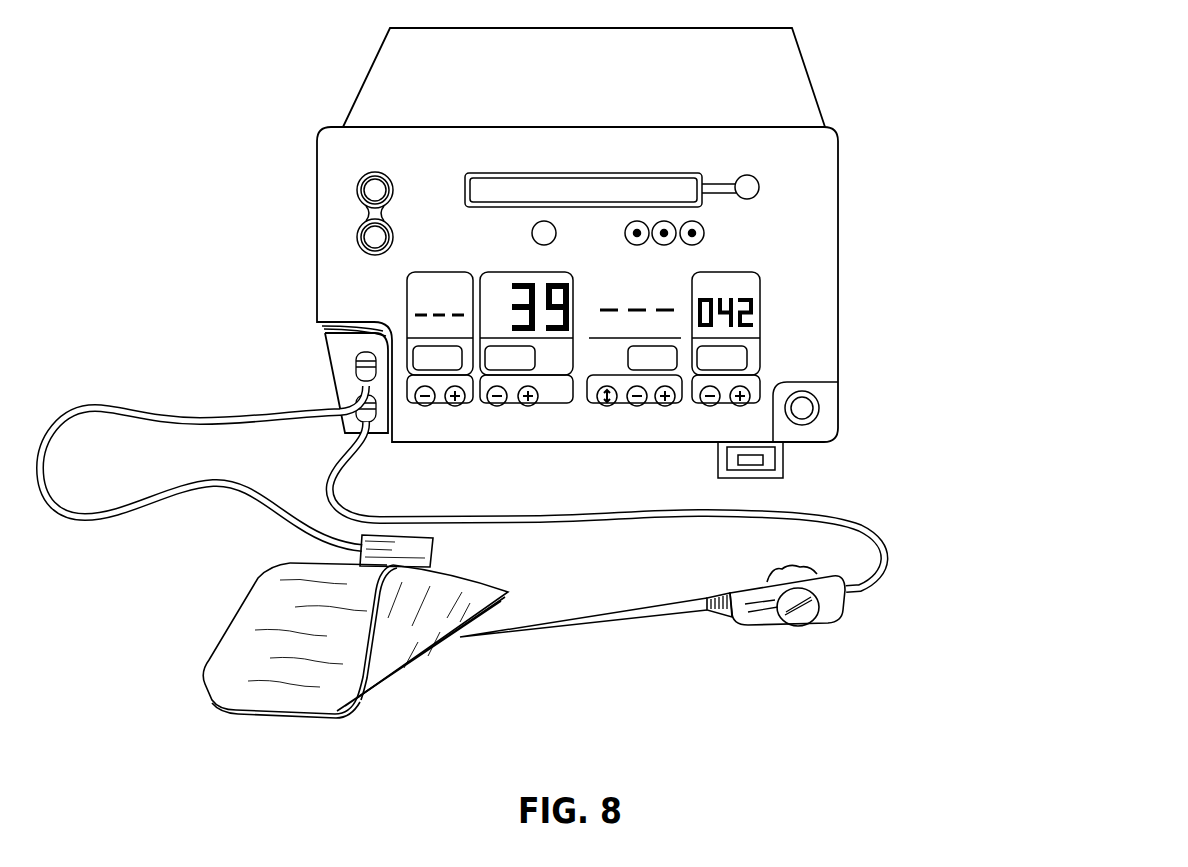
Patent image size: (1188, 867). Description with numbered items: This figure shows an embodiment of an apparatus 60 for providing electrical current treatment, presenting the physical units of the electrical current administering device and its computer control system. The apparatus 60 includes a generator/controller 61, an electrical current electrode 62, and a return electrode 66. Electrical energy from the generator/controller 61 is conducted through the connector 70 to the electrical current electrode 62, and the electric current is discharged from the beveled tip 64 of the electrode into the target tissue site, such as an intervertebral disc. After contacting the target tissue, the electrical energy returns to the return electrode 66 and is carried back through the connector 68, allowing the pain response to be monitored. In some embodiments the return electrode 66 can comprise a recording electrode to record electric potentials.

The apparatus 60 is at (1110, 75).
The generator/controller 61 is at (318, 98).
The electrical current electrode 62 is at (678, 605).
The beveled tip 64 is at (463, 640).
The return electrode 66 is at (227, 640).
The connector 68 is at (143, 510).
The connector 70 is at (408, 515).